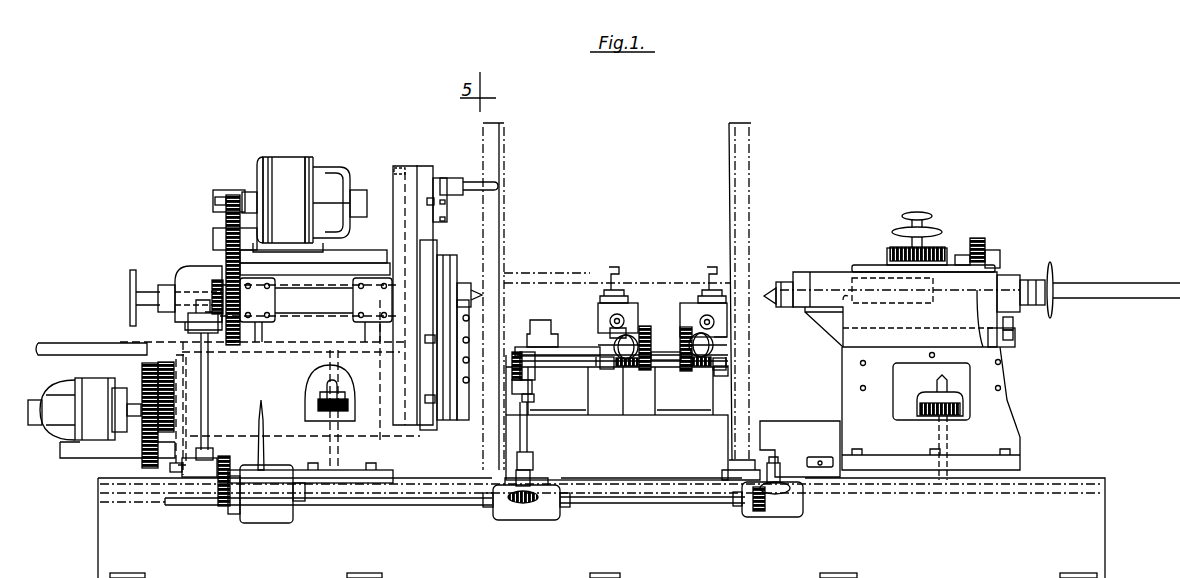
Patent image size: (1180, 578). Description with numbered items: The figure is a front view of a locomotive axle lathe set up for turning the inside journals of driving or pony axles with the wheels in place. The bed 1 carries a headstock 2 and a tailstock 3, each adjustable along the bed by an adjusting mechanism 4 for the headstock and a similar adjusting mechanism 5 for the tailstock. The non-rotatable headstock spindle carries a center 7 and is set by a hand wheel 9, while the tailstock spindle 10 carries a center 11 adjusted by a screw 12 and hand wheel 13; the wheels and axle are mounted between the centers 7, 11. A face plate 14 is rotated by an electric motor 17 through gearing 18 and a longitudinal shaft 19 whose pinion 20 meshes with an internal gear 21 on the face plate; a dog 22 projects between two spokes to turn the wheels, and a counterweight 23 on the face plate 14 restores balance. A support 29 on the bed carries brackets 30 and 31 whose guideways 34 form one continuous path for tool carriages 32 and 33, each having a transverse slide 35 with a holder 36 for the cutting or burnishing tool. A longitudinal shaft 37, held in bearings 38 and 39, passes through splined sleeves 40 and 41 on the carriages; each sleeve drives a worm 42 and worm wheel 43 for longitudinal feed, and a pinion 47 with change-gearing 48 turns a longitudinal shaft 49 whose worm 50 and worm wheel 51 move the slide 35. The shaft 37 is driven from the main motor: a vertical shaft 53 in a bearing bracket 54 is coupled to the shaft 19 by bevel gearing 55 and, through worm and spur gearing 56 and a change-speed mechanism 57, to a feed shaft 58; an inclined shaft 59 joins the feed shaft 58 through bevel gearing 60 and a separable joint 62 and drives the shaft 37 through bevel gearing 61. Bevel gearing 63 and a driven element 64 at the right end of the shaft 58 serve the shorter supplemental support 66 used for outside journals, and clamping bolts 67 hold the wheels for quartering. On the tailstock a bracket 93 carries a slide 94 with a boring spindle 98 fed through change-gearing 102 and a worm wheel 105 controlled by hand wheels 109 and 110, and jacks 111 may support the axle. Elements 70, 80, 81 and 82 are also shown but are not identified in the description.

The bed 1 is at (1085, 530).
The headstock 2 is at (190, 266).
The tailstock 3 is at (1005, 422).
The adjusting mechanism 4 is at (350, 418).
The adjusting mechanism 5 is at (965, 409).
The center 7 is at (478, 92).
The hand wheel 9 is at (130, 275).
The spindle 10 is at (827, 272).
The center 11 is at (776, 290).
The screw 12 is at (940, 294).
The hand wheel 13 is at (1054, 266).
The face plate 14 is at (425, 168).
The electric motor 17 is at (304, 204).
The gearing 18 is at (214, 213).
The longitudinal shaft 19 is at (313, 300).
The pinion 20 is at (315, 251).
The internal gear 21 is at (393, 178).
The dog 22 is at (472, 182).
The counterweight 23 is at (470, 425).
The support 29 is at (617, 417).
The bracket 30 is at (558, 403).
The bracket 31 is at (684, 402).
The tool carriage 32 is at (598, 350).
The tool carriage 33 is at (730, 347).
The longitudinal guideway 34 is at (668, 338).
The transverse slide 35 is at (690, 312).
The holder 36 is at (725, 295).
The longitudinal shaft 37 is at (577, 365).
The bearing 38 is at (519, 352).
The bearing 39 is at (732, 371).
The sleeve 40 is at (630, 370).
The sleeve 41 is at (700, 372).
The worm 42 is at (716, 368).
The worm wheel 43 is at (770, 357).
The pinion 47 is at (646, 372).
The change-gearing 48 is at (664, 371).
The longitudinal shaft 49 is at (630, 318).
The worm 50 is at (612, 330).
The worm wheel 51 is at (628, 305).
The vertical shaft 53 is at (210, 402).
The bearing bracket 54 is at (188, 327).
The bevel gearing 55 is at (208, 291).
The worm and spur gearing 56 is at (221, 455).
The change-speed mechanism 57 is at (277, 524).
The longitudinal feed shaft 58 is at (443, 506).
The inclined shaft 59 is at (530, 441).
The bevel gearing 60 is at (518, 506).
The bevel gearing 61 is at (535, 377).
The separable joint 62 is at (535, 468).
The bevel gearing 63 is at (760, 512).
The driven element 64 is at (780, 476).
The supplemental support 66 is at (800, 421).
The clamping bolts 67 is at (470, 283).
The lever 70 is at (267, 447).
The motor 80 is at (84, 409).
The motor base 81 is at (90, 460).
The gear 82 is at (142, 381).
The bracket 93 is at (1017, 345).
The slide 94 is at (1014, 323).
The spindle 98 is at (1118, 283).
The change-gearing 102 is at (988, 244).
The worm wheel 105 is at (888, 256).
The hand wheel 109 is at (935, 233).
The hand wheel 110 is at (932, 216).
The jacks 111 is at (543, 320).